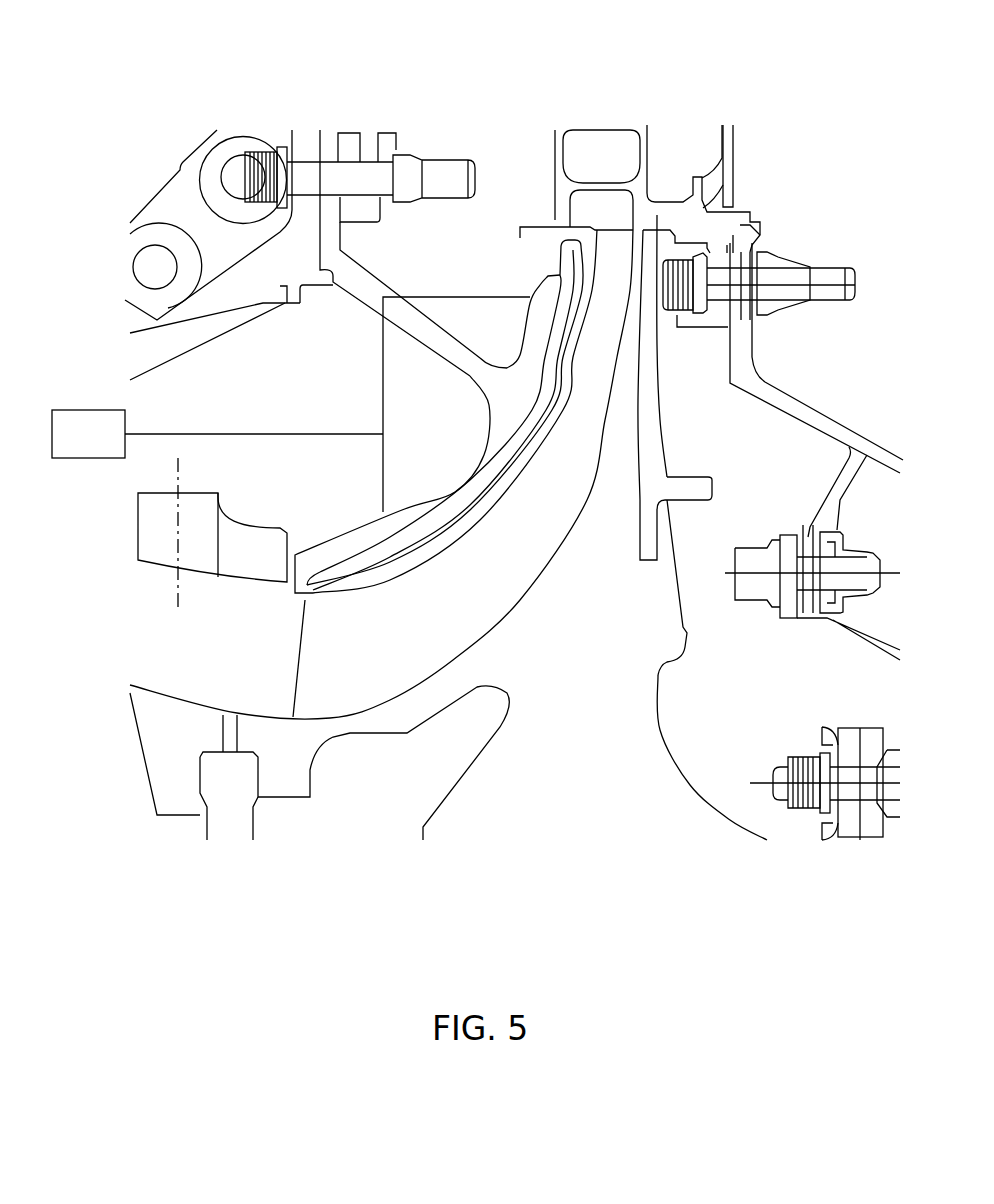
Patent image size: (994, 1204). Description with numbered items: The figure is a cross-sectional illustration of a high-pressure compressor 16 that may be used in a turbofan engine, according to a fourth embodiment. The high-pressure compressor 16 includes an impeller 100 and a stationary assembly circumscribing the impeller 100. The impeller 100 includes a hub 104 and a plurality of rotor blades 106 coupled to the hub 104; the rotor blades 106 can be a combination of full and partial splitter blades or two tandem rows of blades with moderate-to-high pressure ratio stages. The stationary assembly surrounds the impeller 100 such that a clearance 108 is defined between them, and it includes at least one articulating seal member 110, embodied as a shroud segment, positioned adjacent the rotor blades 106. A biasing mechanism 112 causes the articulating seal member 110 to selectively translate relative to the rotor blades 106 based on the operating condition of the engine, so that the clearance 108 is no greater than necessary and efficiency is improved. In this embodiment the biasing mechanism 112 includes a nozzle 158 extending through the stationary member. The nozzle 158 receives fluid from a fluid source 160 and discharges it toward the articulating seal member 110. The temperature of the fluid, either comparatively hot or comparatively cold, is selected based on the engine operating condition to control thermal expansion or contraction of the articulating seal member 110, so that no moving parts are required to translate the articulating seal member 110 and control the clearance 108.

The high-pressure compressor 16 is at (433, 106).
The impeller 100 is at (660, 855).
The hub 104 is at (592, 730).
The rotor blades 106 is at (506, 578).
The clearance 108 is at (292, 597).
The articulating seal member 110 is at (560, 274).
The biasing mechanism 112 is at (358, 341).
The nozzle 158 is at (540, 287).
The fluid source 160 is at (107, 447).